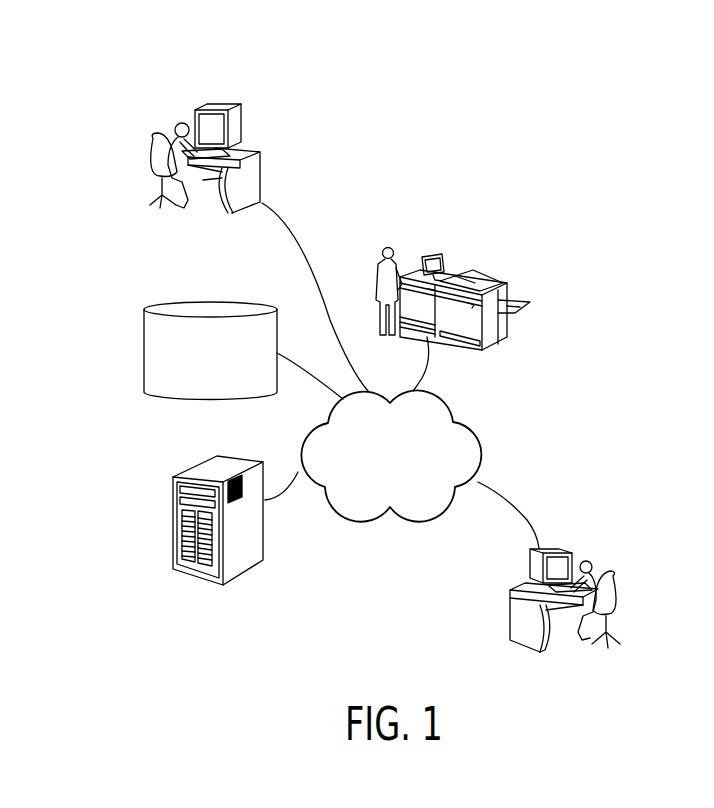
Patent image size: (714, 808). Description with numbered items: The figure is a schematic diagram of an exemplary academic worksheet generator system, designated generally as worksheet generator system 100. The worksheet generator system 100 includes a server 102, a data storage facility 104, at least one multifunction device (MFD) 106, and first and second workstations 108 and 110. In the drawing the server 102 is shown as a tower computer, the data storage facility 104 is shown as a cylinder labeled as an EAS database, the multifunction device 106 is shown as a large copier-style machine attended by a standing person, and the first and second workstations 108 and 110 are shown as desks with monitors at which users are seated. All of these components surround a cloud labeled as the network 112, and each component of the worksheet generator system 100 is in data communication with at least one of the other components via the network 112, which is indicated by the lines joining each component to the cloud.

The worksheet generator system 100 is at (95, 54).
The server 102 is at (202, 463).
The data storage facility 104 is at (229, 302).
The multifunction device 106 is at (492, 277).
The first workstation 108 is at (228, 105).
The second workstation 110 is at (571, 548).
The network 112 is at (482, 442).